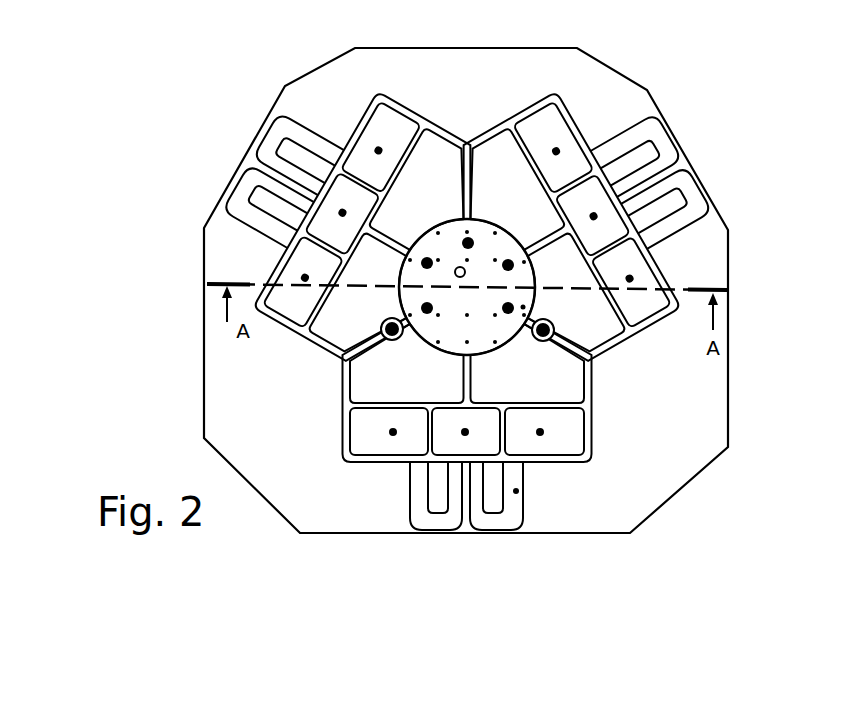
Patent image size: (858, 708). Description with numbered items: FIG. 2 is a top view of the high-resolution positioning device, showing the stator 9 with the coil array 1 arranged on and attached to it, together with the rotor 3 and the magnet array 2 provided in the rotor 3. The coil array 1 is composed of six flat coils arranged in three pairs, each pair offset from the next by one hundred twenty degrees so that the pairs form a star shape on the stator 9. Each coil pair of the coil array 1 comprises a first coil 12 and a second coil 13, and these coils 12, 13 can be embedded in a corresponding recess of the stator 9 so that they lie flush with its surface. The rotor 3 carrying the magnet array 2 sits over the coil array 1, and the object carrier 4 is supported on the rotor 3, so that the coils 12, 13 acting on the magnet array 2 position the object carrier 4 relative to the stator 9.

The coil array 1 is at (534, 489).
The magnet array 2 is at (572, 428).
The rotor 3 is at (324, 348).
The object carrier 4 is at (525, 306).
The stator 9 is at (657, 494).
The first coil 12 is at (275, 133).
The second coil 13 is at (240, 204).